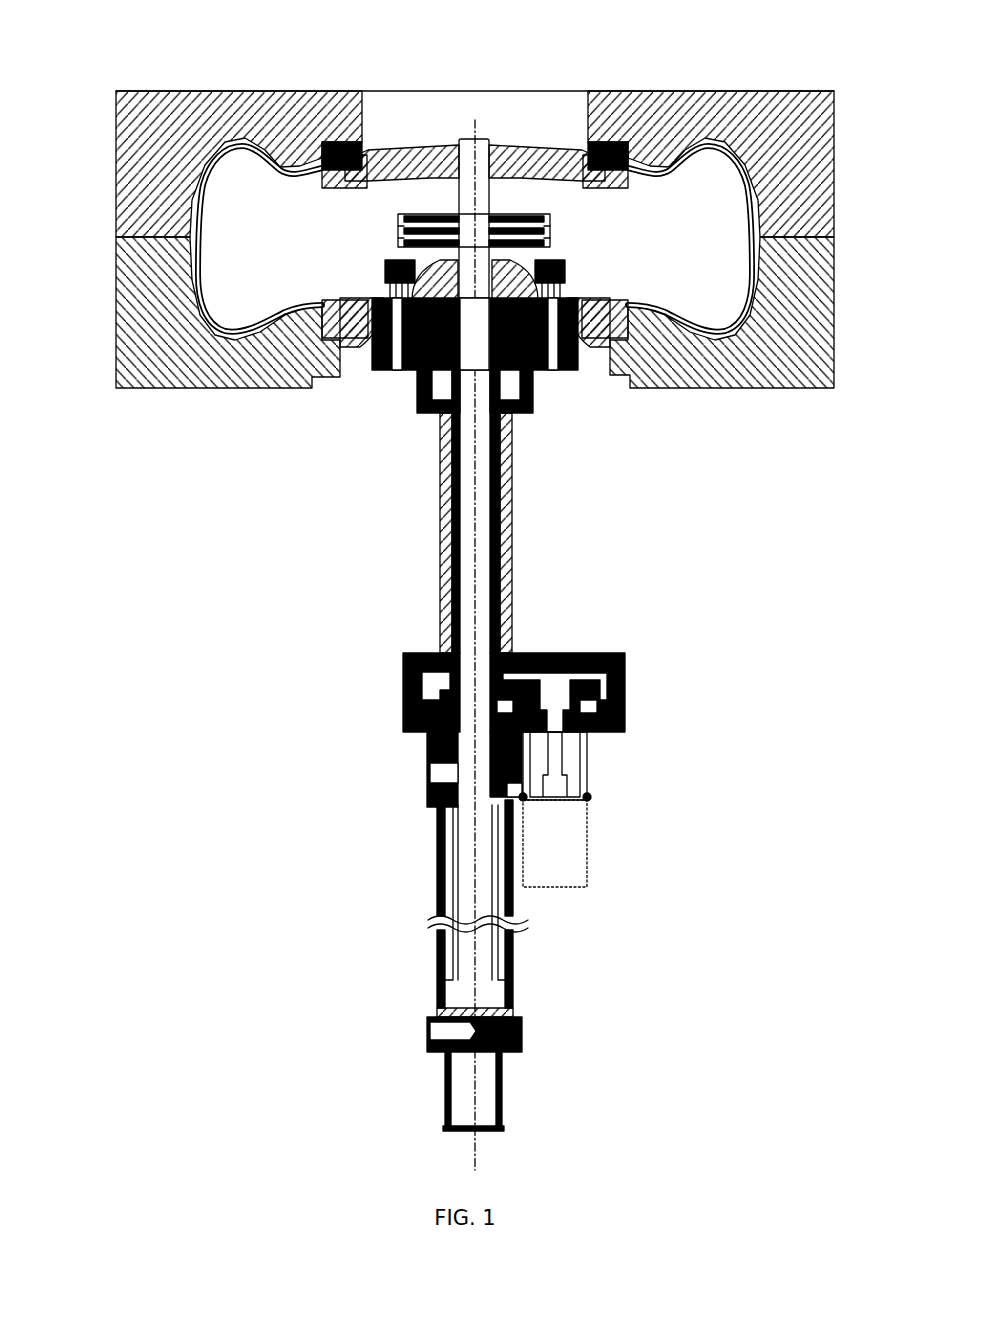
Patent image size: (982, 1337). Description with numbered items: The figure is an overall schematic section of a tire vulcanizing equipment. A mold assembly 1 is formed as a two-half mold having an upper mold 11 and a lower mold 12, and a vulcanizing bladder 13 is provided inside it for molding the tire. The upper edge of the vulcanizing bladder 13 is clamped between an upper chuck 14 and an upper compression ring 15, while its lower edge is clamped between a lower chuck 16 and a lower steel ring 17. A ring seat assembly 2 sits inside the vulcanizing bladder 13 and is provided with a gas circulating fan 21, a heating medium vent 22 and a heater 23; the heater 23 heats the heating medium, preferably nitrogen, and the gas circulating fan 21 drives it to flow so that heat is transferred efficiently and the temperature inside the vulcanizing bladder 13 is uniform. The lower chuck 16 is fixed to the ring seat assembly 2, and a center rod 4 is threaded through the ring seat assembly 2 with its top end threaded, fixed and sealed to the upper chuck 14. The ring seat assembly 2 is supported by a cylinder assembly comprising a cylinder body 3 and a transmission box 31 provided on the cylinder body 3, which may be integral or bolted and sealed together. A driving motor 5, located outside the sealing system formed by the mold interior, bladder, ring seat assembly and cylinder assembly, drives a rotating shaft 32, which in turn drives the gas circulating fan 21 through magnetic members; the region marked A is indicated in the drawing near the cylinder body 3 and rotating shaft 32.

The mold assembly 1 is at (68, 212).
The upper mold 11 is at (165, 193).
The lower mold 12 is at (165, 272).
The vulcanizing bladder 13 is at (235, 143).
The upper chuck 14 is at (367, 150).
The upper compression ring 15 is at (347, 140).
The lower chuck 16 is at (342, 360).
The lower steel ring 17 is at (310, 386).
The ring seat assembly 2 is at (660, 281).
The gas circulating fan 21 is at (563, 266).
The heating medium vent 22 is at (392, 360).
The heater 23 is at (550, 226).
The cylinder body 3 is at (533, 400).
The transmission box 31 is at (405, 660).
The rotating shaft 32 is at (503, 457).
The center rod 4 is at (483, 445).
The driving motor 5 is at (565, 836).
The gap A is at (497, 390).